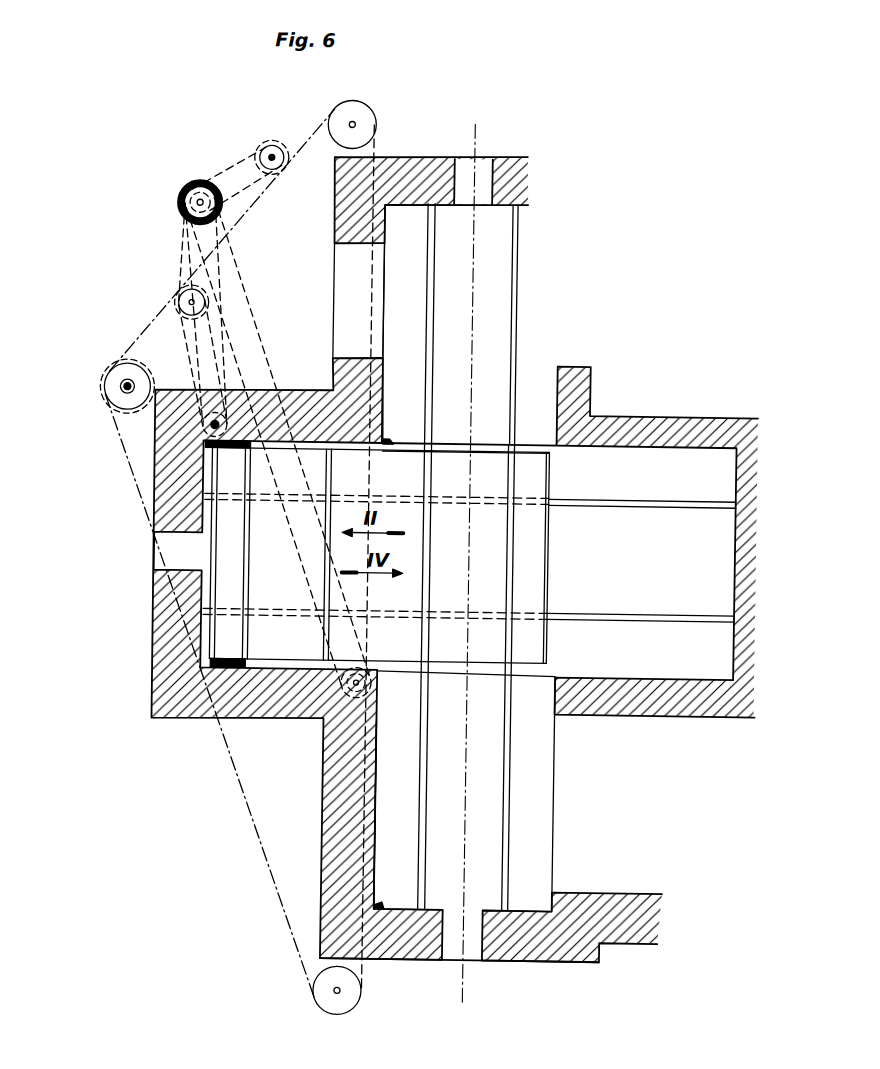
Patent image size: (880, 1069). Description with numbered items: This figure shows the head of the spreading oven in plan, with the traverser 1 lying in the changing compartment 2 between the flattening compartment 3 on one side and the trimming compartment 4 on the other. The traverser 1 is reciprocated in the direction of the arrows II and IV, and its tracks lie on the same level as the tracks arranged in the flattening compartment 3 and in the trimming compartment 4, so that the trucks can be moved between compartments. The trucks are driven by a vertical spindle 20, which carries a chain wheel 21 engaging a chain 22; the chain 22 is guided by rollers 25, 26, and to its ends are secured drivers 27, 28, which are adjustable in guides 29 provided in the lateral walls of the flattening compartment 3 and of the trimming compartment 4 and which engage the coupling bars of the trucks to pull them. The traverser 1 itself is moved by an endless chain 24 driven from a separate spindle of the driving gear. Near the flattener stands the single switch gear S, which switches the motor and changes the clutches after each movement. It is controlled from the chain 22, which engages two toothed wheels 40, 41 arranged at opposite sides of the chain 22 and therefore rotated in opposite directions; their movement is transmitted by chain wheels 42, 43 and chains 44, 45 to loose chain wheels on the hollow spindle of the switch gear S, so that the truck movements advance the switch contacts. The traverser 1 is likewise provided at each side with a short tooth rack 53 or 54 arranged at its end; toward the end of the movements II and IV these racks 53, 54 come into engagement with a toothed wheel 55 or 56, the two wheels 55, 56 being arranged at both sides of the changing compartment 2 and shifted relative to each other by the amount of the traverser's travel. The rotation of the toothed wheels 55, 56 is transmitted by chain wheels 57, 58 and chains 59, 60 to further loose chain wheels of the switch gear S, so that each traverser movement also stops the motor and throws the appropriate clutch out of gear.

The switch gear S is at (181, 194).
The traverser 1 is at (380, 561).
The changing compartment 2 is at (641, 560).
The flattening compartment 3 is at (450, 324).
The trimming compartment 4 is at (464, 793).
The vertical spindle 20 is at (116, 372).
The chain wheel 21 is at (122, 412).
The chain 22 is at (303, 144).
The endless chain 24 is at (470, 136).
The roller 25 is at (371, 121).
The roller 26 is at (368, 992).
The driver 27 is at (384, 444).
The driver 28 is at (380, 904).
The guide 29 is at (376, 778).
The toothed wheel 40 is at (262, 147).
The toothed wheel 41 is at (186, 320).
The chain wheel 42 is at (280, 171).
The chain wheel 43 is at (176, 296).
The chain 44 is at (226, 178).
The chain 45 is at (176, 255).
The tooth rack 53 is at (220, 452).
The tooth rack 54 is at (218, 658).
The toothed wheel 55 is at (172, 437).
The toothed wheel 56 is at (362, 668).
The chain wheel 57 is at (206, 417).
The chain wheel 58 is at (374, 690).
The chain 59 is at (215, 355).
The chain 60 is at (240, 350).